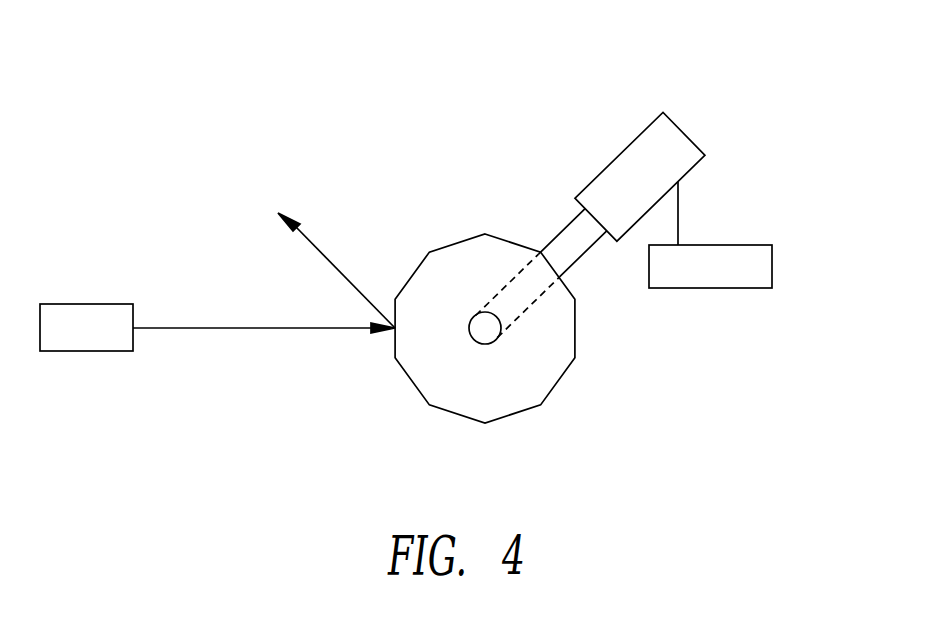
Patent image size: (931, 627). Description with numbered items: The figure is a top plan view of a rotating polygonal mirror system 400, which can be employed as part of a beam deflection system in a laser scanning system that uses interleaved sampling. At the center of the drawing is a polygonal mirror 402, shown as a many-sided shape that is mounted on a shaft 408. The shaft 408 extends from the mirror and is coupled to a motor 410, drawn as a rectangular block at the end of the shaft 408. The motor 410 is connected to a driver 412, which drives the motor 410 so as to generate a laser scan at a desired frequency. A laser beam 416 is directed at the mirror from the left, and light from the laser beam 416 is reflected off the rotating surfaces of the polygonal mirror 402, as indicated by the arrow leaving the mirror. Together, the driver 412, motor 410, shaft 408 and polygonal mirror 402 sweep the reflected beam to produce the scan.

The rotating polygonal mirror system 400 is at (700, 68).
The polygonal mirror 402 is at (560, 380).
The shaft 408 is at (559, 232).
The motor 410 is at (687, 136).
The driver 412 is at (773, 265).
The laser beam 416 is at (263, 330).